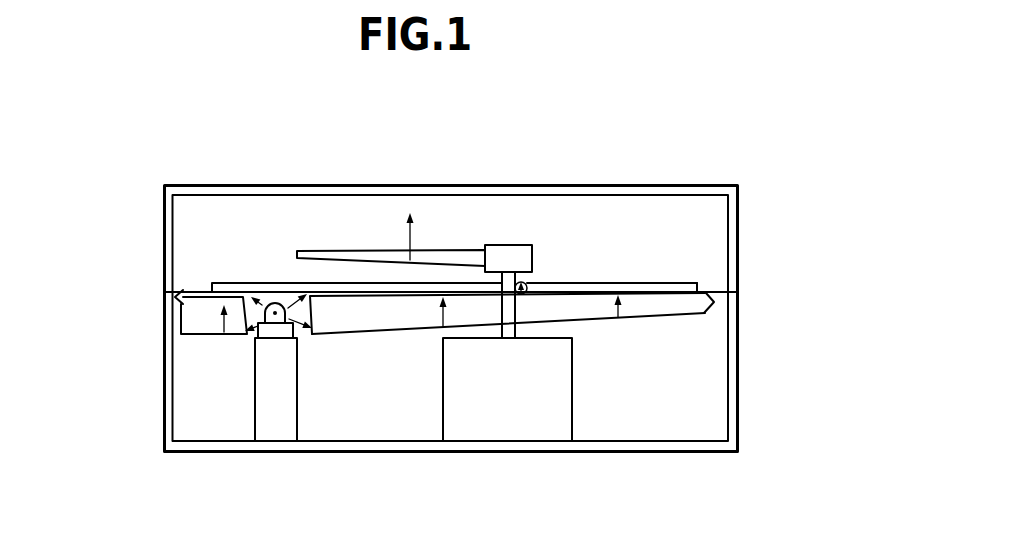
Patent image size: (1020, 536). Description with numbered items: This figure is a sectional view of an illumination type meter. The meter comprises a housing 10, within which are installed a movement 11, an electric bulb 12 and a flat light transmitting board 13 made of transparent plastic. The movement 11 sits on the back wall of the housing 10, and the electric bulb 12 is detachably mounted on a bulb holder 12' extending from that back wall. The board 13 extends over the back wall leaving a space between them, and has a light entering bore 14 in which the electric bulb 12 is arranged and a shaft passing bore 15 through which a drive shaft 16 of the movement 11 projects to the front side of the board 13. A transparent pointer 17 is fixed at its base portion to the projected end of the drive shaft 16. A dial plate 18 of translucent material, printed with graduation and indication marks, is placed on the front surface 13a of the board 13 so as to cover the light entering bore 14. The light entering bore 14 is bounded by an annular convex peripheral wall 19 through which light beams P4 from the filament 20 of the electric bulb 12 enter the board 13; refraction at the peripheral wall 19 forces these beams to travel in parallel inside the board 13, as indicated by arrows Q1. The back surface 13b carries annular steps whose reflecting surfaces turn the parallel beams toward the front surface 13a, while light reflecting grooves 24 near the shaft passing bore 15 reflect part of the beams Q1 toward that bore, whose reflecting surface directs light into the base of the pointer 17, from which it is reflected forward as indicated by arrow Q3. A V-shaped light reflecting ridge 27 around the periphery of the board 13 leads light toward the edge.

The housing 10 is at (740, 355).
The movement 11 is at (529, 420).
The electric bulb 12 is at (261, 233).
The bulb holder 12' is at (201, 378).
The flat light transmitting board 13 is at (368, 340).
The front surface of the board 13a is at (653, 282).
The back surface of the board 13b is at (667, 314).
The light entering bore 14 is at (261, 301).
The shaft passing bore 15 is at (522, 280).
The drive shaft 16 is at (509, 250).
The transparent pointer 17 is at (297, 252).
The dial plate 18 is at (680, 282).
The annular convex peripheral wall 19 is at (308, 330).
The filament 20 is at (276, 316).
The light reflecting grooves 24 is at (530, 292).
The light reflecting ridge 27 is at (181, 296).
The light beams P4 is at (278, 302).
The parallel light beams Q1 is at (195, 294).
The arrow indicating forward reflected light Q3 is at (408, 243).